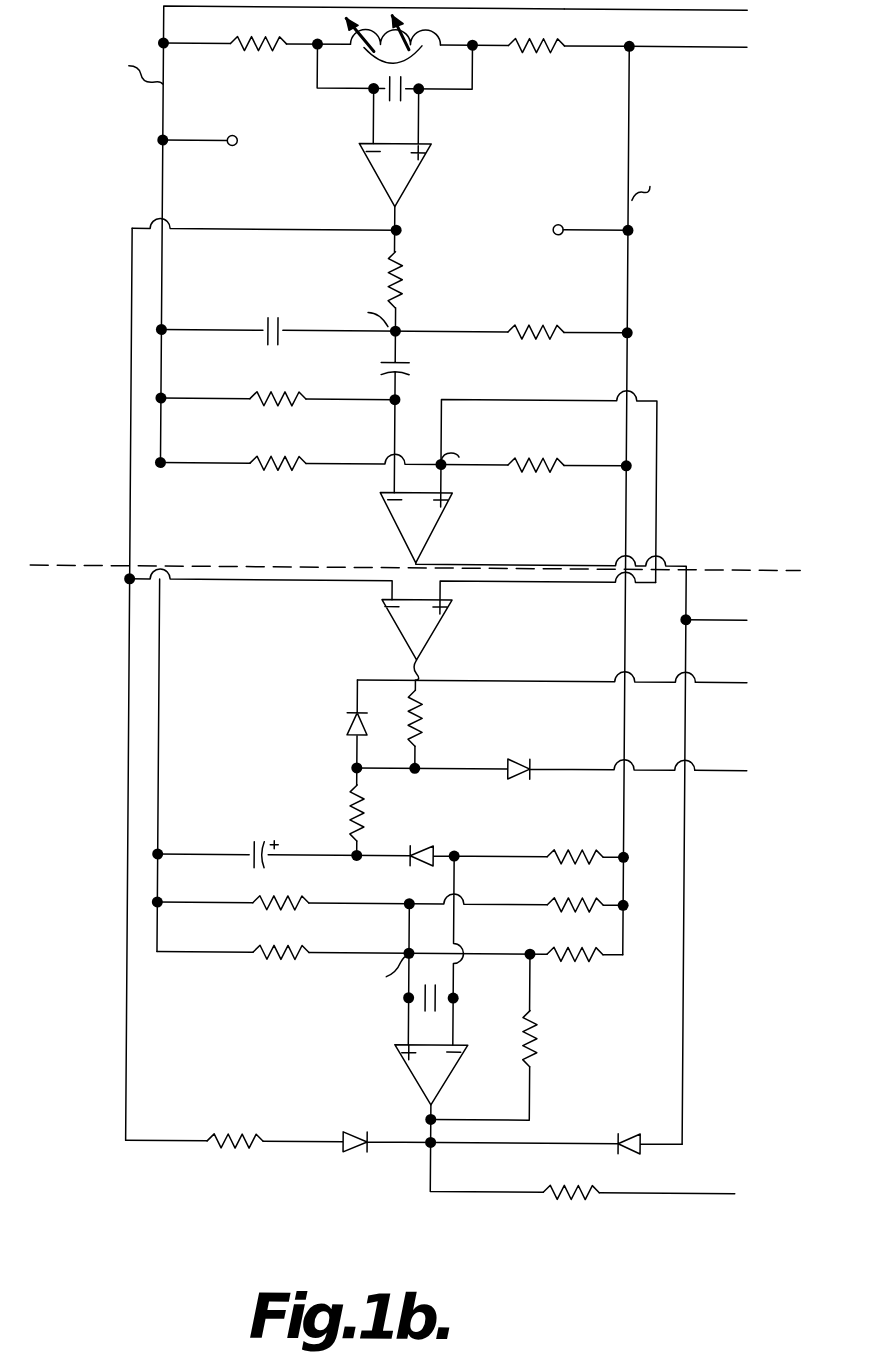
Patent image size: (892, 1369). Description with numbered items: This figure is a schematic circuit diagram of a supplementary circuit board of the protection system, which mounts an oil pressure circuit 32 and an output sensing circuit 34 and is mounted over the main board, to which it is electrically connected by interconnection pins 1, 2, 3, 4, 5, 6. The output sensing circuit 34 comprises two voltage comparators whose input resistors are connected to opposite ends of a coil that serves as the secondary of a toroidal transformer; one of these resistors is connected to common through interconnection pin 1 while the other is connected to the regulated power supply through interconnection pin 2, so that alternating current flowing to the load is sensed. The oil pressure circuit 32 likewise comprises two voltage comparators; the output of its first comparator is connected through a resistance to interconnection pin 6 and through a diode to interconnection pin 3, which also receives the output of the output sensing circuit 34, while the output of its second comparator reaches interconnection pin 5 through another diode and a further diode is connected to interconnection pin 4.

The output sensing circuit 34 is at (136, 114).
The oil pressure circuit 32 is at (97, 906).
The interconnection pin 1 is at (664, 10).
The interconnection pin 2 is at (697, 45).
The interconnection pin 3 is at (722, 622).
The interconnection pin 4 is at (730, 683).
The interconnection pin 5 is at (730, 771).
The interconnection pin 6 is at (675, 1193).